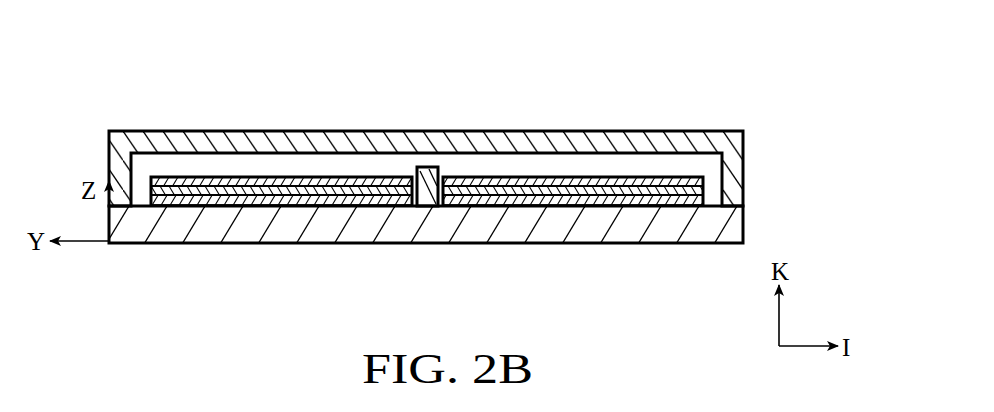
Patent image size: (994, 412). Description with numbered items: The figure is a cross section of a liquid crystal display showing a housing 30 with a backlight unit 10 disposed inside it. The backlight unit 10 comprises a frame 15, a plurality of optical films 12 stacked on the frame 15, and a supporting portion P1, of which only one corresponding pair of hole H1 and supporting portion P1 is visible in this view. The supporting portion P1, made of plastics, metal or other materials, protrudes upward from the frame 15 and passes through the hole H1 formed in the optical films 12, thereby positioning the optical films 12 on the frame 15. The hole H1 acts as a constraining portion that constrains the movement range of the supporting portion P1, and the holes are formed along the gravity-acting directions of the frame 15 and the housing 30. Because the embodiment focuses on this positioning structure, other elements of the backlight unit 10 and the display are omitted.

The housing 30 is at (117, 141).
The frame 15 is at (146, 236).
The optical films 12 is at (752, 179).
The backlight unit 10 is at (803, 132).
The supporting portion P1 is at (434, 173).
The hole H1 is at (444, 184).